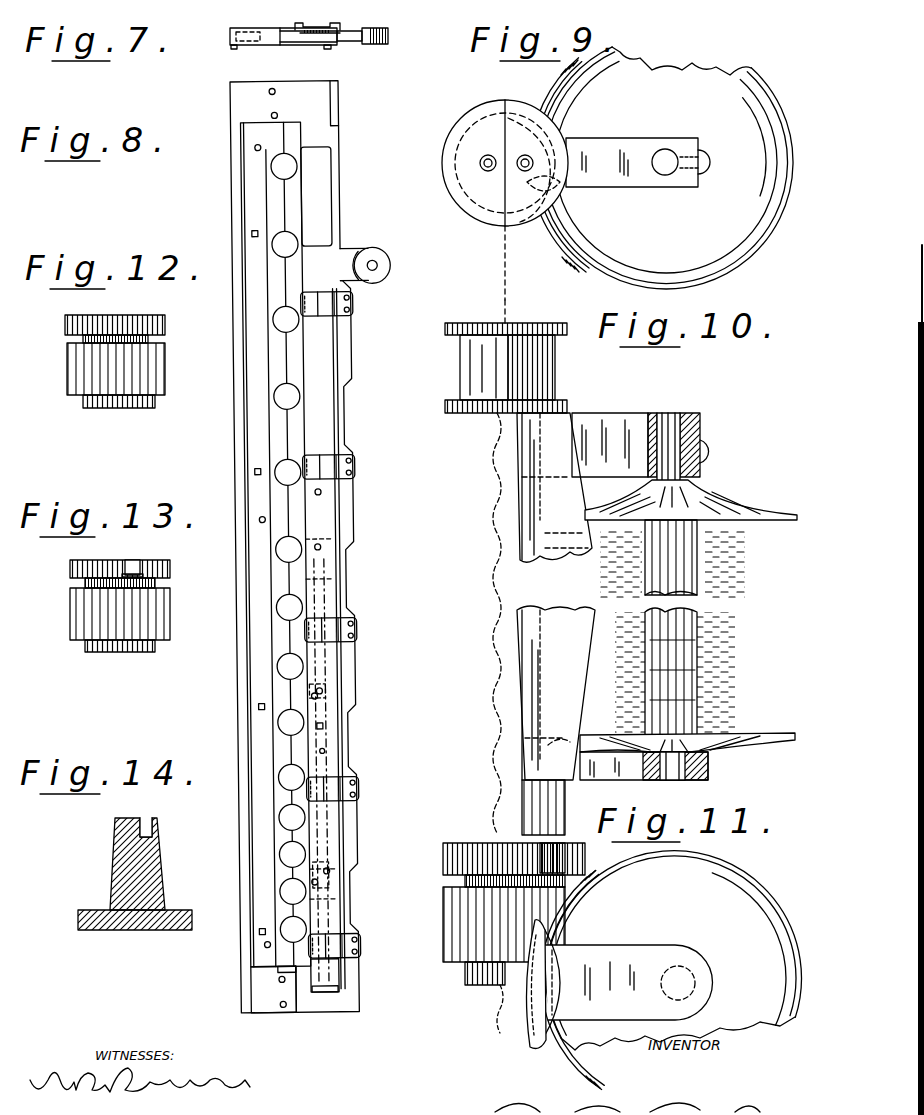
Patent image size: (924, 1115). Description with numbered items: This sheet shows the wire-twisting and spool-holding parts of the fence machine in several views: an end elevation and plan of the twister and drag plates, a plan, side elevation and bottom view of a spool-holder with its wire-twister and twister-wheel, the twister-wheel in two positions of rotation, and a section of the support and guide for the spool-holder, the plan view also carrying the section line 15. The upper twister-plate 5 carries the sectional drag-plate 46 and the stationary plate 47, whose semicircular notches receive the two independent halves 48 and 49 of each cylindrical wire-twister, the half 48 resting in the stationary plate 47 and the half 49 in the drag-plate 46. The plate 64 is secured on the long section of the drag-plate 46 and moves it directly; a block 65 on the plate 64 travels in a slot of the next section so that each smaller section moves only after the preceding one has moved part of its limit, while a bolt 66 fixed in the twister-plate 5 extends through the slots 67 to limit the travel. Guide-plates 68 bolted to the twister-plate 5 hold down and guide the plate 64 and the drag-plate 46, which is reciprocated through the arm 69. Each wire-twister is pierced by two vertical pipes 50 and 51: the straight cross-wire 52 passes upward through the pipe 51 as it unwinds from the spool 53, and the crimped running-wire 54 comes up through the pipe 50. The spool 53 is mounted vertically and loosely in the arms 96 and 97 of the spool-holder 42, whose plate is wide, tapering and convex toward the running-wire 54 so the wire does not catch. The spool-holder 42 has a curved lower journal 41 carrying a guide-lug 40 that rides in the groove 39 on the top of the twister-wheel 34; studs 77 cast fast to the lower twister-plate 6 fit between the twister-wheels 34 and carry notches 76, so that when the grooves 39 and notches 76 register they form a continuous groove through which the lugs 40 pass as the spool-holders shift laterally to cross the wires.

In FIG. 7, the upper twister-plate 5 is at (250, 45).
In FIG. 8, the upper twister-plate 5 is at (258, 975).
In FIG. 14, the lower twister-plate 6 is at (97, 910).
In FIG. 8, the section line 15 is at (348, 560).
In FIG. 12, the twister-wheel 34 is at (167, 364).
In FIG. 13, the twister-wheel 34 is at (172, 612).
In FIG. 10, the twister-wheel 34 is at (443, 925).
In FIG. 13, the groove 39 is at (128, 560).
In FIG. 10, the guide-lug 40 is at (523, 852).
In FIG. 11, the guide-lug 40 is at (533, 1038).
In FIG. 10, the journal 41 is at (527, 813).
In FIG. 11, the journal 41 is at (553, 967).
In FIG. 9, the spool-holder 42 is at (540, 87).
In FIG. 10, the spool-holder 42 is at (556, 596).
In FIG. 11, the spool-holder 42 is at (558, 1063).
In FIG. 7, the drag-plate 46 is at (292, 40).
In FIG. 8, the drag-plate 46 is at (303, 970).
In FIG. 8, the stationary plate 47 is at (285, 957).
In FIG. 9, the wire-twister half 48 is at (463, 207).
In FIG. 10, the wire-twister half 48 is at (462, 371).
In FIG. 9, the wire-twister half 49 is at (563, 197).
In FIG. 10, the wire-twister half 49 is at (557, 370).
In FIG. 9, the vertical pipe 50 is at (487, 157).
In FIG. 9, the vertical pipe 51 is at (532, 157).
In FIG. 10, the straight wire 52 is at (517, 316).
In FIG. 9, the spool 53 is at (666, 168).
In FIG. 10, the spool 53 is at (690, 635).
In FIG. 11, the spool 53 is at (673, 950).
In FIG. 10, the crimped wire 54 is at (486, 475).
In FIG. 7, the plate 64 is at (326, 28).
In FIG. 8, the plate 64 is at (324, 639).
In FIG. 8, the block 65 is at (330, 693).
In FIG. 8, the bolt 66 is at (326, 727).
In FIG. 8, the slot 67 is at (326, 750).
In FIG. 7, the guide-plate 68 is at (327, 29).
In FIG. 8, the guide-plate 68 is at (322, 310).
In FIG. 7, the arm 69 is at (371, 44).
In FIG. 8, the arm 69 is at (342, 260).
In FIG. 14, the notch 76 is at (144, 820).
In FIG. 14, the stud 77 is at (153, 878).
In FIG. 9, the arm 96 is at (638, 162).
In FIG. 10, the arm 96 is at (610, 417).
In FIG. 10, the arm 97 is at (593, 777).
In FIG. 11, the arm 97 is at (629, 982).